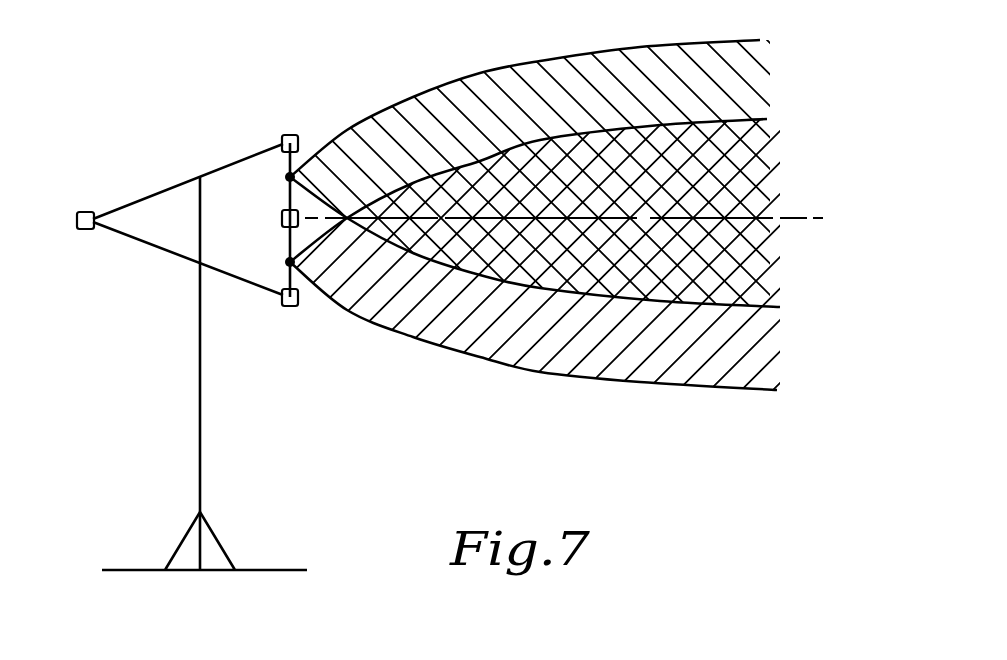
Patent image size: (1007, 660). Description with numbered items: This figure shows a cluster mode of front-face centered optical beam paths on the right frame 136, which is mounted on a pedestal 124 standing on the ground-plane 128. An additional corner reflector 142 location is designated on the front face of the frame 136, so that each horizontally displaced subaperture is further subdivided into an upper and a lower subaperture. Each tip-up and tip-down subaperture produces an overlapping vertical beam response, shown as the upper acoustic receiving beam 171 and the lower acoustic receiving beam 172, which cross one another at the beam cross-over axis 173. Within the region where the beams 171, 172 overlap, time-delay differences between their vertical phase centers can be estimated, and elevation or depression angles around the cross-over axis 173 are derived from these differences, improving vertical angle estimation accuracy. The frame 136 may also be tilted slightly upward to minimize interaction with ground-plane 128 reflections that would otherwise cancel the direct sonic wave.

The pedestal 124 is at (200, 441).
The ground-plane 128 is at (262, 569).
The right frame 136 is at (166, 253).
The corner reflector 142 is at (283, 139).
The upper acoustic receiving beam 171 is at (609, 103).
The lower acoustic receiving beam 172 is at (632, 353).
The cross-over axis 173 is at (790, 217).